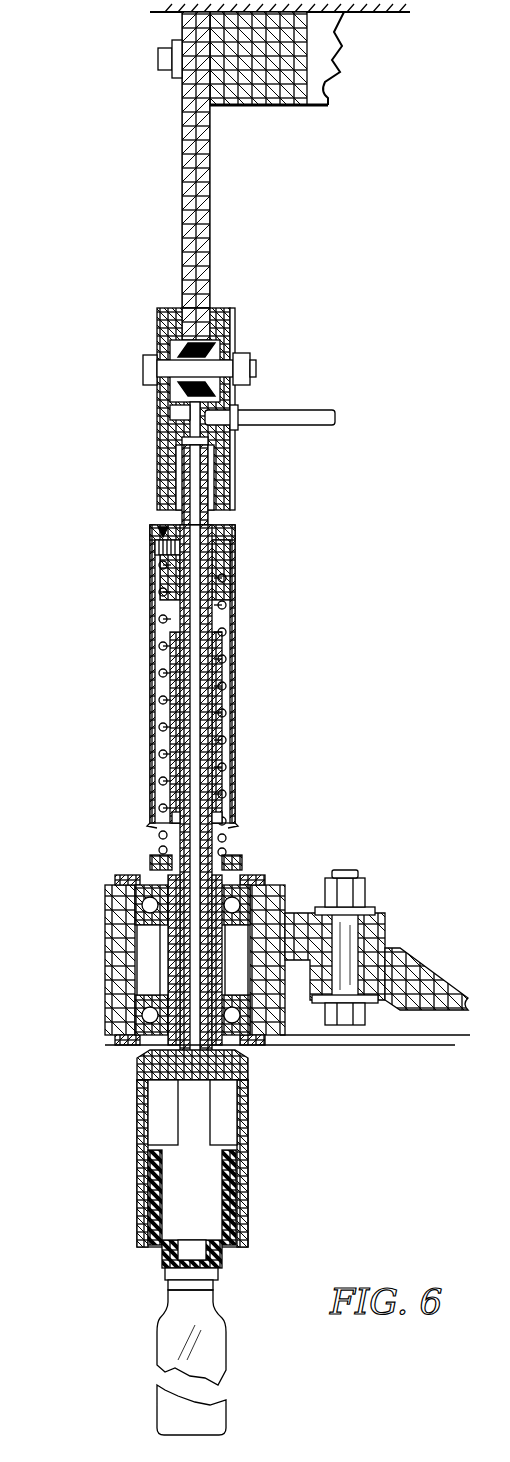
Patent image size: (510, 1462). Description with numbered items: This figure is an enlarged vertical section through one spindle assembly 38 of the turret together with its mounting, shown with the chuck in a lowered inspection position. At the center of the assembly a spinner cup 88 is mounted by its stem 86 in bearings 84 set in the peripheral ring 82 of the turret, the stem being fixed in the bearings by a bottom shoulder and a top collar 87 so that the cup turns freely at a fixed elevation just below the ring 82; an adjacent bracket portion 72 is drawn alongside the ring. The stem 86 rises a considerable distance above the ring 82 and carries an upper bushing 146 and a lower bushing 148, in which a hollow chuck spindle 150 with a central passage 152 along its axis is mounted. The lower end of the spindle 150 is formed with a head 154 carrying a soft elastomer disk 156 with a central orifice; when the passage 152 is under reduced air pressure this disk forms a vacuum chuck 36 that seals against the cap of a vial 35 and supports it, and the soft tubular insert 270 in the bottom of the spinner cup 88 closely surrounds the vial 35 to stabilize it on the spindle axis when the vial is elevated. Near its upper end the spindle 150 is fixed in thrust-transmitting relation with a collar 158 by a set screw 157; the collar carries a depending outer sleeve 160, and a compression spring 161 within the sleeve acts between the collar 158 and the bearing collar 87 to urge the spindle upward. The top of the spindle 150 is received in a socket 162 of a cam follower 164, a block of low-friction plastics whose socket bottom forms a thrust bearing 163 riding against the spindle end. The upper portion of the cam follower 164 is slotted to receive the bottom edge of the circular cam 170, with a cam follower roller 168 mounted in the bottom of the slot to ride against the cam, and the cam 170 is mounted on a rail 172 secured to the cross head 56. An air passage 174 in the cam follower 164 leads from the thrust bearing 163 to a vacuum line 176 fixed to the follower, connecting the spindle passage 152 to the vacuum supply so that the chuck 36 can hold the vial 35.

The cross head 56 is at (385, 15).
The rail 172 is at (285, 100).
The cam 170 is at (215, 228).
The cam follower roller 168 is at (165, 340).
The vacuum line 176 is at (296, 415).
The air passage 174 is at (170, 437).
The thrust bearing 163 is at (215, 447).
The cam follower 164 is at (233, 477).
The socket 162 is at (192, 490).
The set screw 157 is at (153, 548).
The collar 158 is at (232, 547).
The spring 161 is at (218, 608).
The upper bushing 146 is at (220, 650).
The outer sleeve 160 is at (232, 687).
The spindle assembly 38 is at (244, 756).
The chuck spindle 150 is at (200, 781).
The central passage 152 is at (196, 812).
The stem 86 is at (226, 842).
The collar 87 is at (237, 867).
The peripheral ring 82 is at (305, 916).
The support arm 72 is at (423, 957).
The bearings 84 is at (145, 912).
The lower bushing 148 is at (250, 1074).
The spinner cup 88 is at (250, 1120).
The stabilizing insert 270 is at (237, 1218).
The head 154 is at (222, 1257).
The elastomer disk 156 is at (160, 1256).
The vacuum chuck 36 is at (152, 1281).
The vial 35 is at (213, 1342).